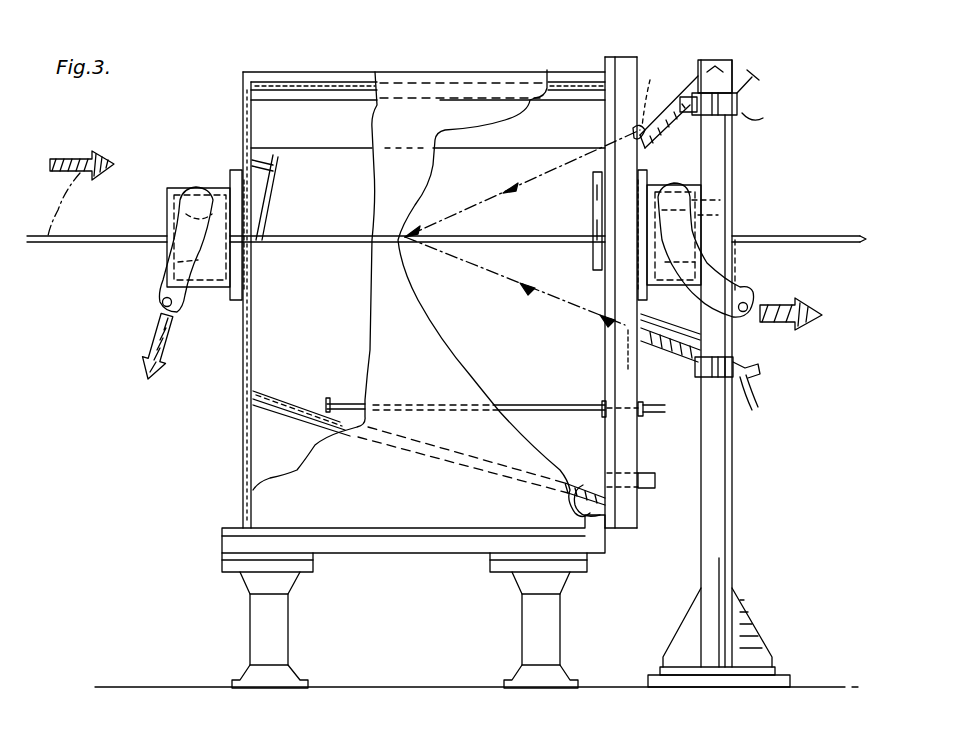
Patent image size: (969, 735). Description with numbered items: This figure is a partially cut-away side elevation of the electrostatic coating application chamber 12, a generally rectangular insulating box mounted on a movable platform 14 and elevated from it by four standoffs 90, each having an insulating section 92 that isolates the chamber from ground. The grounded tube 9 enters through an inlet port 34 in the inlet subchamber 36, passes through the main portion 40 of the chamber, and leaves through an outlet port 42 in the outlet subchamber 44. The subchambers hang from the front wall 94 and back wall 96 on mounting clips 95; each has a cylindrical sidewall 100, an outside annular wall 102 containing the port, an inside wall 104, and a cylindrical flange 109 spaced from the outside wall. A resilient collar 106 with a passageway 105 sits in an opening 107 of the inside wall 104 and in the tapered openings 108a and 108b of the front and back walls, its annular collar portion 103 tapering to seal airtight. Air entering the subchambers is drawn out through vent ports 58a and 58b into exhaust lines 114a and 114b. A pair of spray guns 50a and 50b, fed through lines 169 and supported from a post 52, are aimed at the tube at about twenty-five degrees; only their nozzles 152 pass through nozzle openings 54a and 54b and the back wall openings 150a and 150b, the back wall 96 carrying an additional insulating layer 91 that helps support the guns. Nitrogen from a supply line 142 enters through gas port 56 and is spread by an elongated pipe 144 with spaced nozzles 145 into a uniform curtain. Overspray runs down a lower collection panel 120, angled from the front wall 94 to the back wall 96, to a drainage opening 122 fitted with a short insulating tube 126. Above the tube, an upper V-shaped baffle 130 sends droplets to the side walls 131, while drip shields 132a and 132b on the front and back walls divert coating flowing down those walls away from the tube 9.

The tube 9 is at (425, 238).
The coating application chamber 12 is at (335, 60).
The movable platform 14 is at (398, 690).
The inlet port 34 is at (150, 300).
The inlet subchamber 36 is at (205, 305).
The main portion 40 is at (258, 465).
The outlet port 42 is at (744, 265).
The outlet subchamber 44 is at (735, 225).
The upper spray gun 50a is at (695, 80).
The lower spray gun 50b is at (670, 350).
The post 52 is at (740, 522).
The nozzle opening 54a is at (688, 85).
The nozzle opening 54b is at (636, 363).
The gas port 56 is at (643, 403).
The vent port 58a is at (182, 222).
The vent port 58b is at (705, 222).
The standoff 90 is at (238, 590).
The additional layer 91 is at (630, 512).
The insulating section 92 is at (275, 640).
The front wall 94 is at (253, 332).
The mounting clip 95 is at (648, 298).
The back wall 96 is at (612, 535).
The cylindrical sidewall 100 is at (195, 185).
The outside annular wall 102 is at (170, 240).
The annular collar portion 103 is at (595, 180).
The inside wall 104 is at (232, 170).
The cylindrical passageway 105 is at (600, 280).
The collar 106 is at (600, 285).
The opening 107 is at (690, 135).
The front wall opening 108a is at (250, 283).
The back wall opening 108b is at (610, 305).
The cylindrical flange 109 is at (175, 190).
The exhaust line 114a is at (165, 345).
The exhaust line 114b is at (755, 288).
The lower collection panel 120 is at (410, 455).
The drainage opening 122 is at (628, 467).
The short tube 126 is at (657, 474).
The upper V-shaped baffle 130 is at (278, 108).
The side wall 131 is at (402, 530).
The V-shaped drip shield 132a is at (262, 190).
The drip shield 132b is at (590, 190).
The supply line 142 is at (667, 405).
The elongated pipe 144 is at (520, 405).
The spaced nozzles 145 is at (548, 412).
The opening 150a is at (600, 125).
The opening 150b is at (595, 360).
The nozzle 152 is at (605, 335).
The lines 169 is at (752, 100).